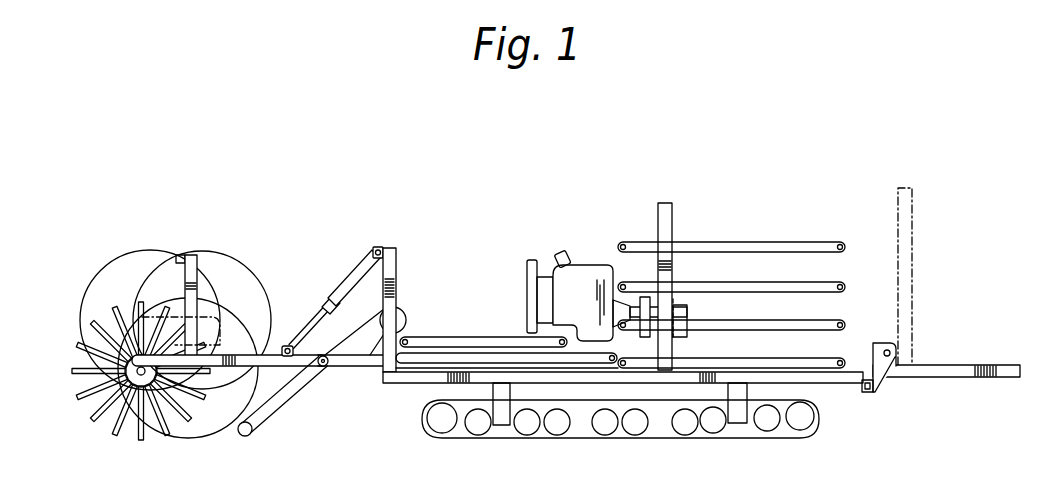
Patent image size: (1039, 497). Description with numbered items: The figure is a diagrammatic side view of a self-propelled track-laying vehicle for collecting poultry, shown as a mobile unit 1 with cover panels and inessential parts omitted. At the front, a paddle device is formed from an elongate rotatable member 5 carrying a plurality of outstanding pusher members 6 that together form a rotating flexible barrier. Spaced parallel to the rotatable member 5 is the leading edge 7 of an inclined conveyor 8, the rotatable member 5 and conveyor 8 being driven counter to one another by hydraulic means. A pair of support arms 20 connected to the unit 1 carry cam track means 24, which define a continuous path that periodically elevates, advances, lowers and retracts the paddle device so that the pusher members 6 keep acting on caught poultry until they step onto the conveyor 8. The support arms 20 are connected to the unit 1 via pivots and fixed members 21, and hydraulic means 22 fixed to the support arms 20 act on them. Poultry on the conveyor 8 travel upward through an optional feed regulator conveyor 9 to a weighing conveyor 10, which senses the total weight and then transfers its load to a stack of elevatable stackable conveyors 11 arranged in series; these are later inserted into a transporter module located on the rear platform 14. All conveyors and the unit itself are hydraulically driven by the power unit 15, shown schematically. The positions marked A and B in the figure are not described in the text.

The mobile unit 1 is at (444, 205).
The rotatable member 5 is at (84, 340).
The pusher members 6 is at (110, 424).
The leading edge 7 is at (240, 437).
The conveyor 8 is at (304, 396).
The feed regulator conveyor 9 is at (452, 343).
The weighing conveyor 10 is at (417, 357).
The stackable conveyors 11 is at (755, 365).
The rear platform 14 is at (925, 378).
The power unit 15 is at (580, 284).
The support arms 20 is at (243, 355).
The fixed members 21 is at (362, 370).
The hydraulic means 22 is at (340, 283).
The cam track means 24 is at (213, 303).
The position A is at (57, 369).
The pivot point B is at (267, 381).